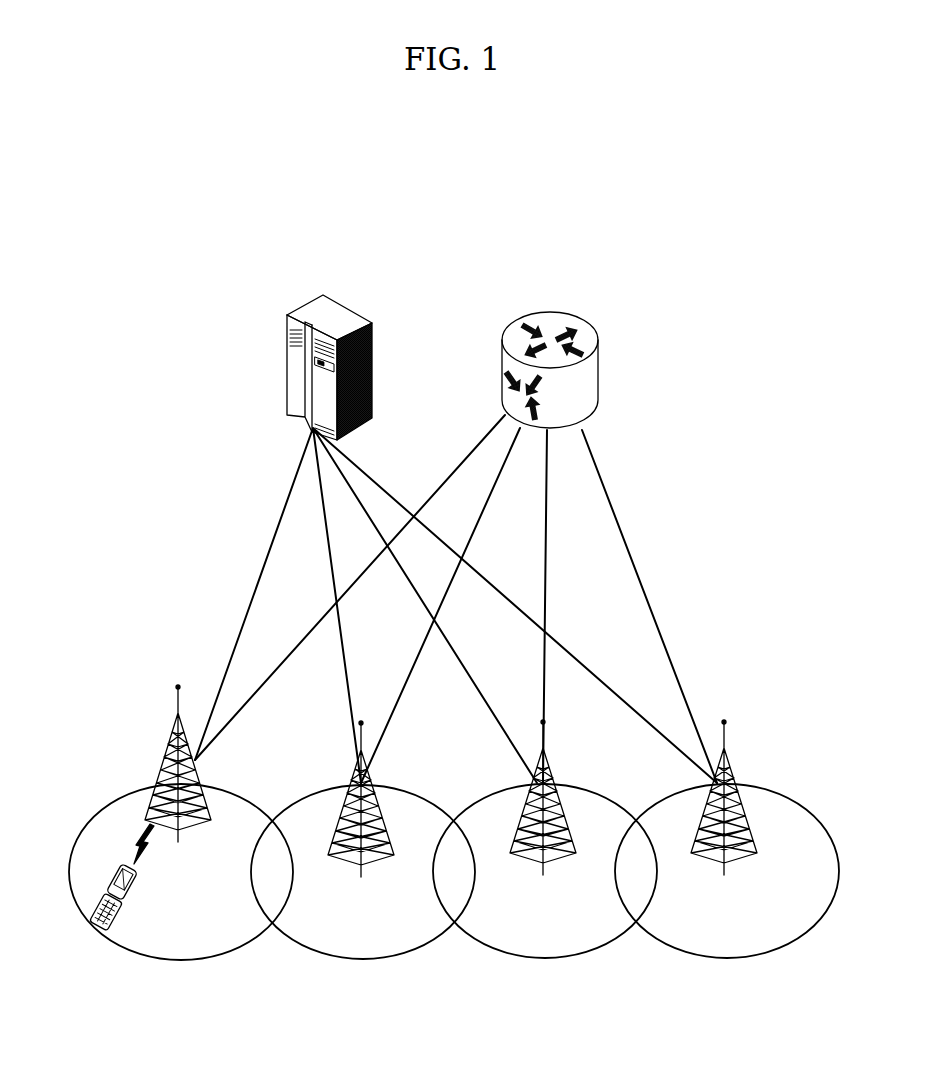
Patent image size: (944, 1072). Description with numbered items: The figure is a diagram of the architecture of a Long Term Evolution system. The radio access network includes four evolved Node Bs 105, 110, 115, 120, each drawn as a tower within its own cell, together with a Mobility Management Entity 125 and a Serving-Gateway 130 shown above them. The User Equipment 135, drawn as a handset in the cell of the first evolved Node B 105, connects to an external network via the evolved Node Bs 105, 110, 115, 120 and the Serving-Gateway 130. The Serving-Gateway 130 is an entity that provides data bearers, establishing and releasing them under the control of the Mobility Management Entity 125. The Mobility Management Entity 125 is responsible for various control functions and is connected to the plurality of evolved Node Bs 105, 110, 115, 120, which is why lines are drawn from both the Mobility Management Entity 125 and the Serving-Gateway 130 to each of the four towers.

The evolved Node B 105 is at (167, 738).
The evolved Node B 110 is at (353, 768).
The evolved Node B 115 is at (553, 760).
The evolved Node B 120 is at (733, 760).
The Mobility Management Entity 125 is at (317, 313).
The Serving-Gateway 130 is at (547, 317).
The User Equipment 135 is at (133, 894).